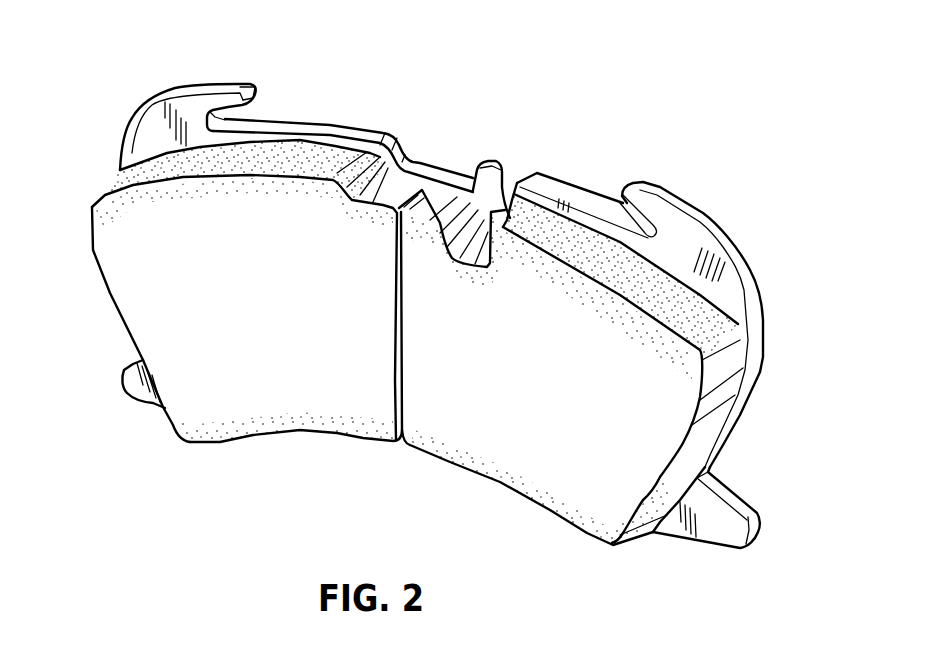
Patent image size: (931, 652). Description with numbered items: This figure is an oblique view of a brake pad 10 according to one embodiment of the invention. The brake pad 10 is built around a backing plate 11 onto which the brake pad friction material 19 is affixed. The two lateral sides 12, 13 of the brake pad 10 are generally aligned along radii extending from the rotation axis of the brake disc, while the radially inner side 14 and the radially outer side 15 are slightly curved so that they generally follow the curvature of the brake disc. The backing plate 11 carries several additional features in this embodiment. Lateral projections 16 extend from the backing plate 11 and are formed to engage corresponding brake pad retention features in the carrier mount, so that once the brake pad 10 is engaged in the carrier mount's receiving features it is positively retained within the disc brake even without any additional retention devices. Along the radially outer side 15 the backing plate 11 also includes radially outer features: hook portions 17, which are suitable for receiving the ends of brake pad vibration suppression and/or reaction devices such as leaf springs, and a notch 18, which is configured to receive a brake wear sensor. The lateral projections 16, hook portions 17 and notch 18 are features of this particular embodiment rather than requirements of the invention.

The brake pad 10 is at (648, 98).
The backing plate 11 is at (722, 240).
The lateral side 12 is at (110, 293).
The lateral side 13 is at (717, 420).
The radially inner side 14 is at (300, 433).
The radially outer side 15 is at (340, 126).
The lateral projection 16 is at (763, 528).
The hook portion 17 is at (243, 82).
The notch 18 is at (510, 173).
The brake pad friction material 19 is at (550, 513).